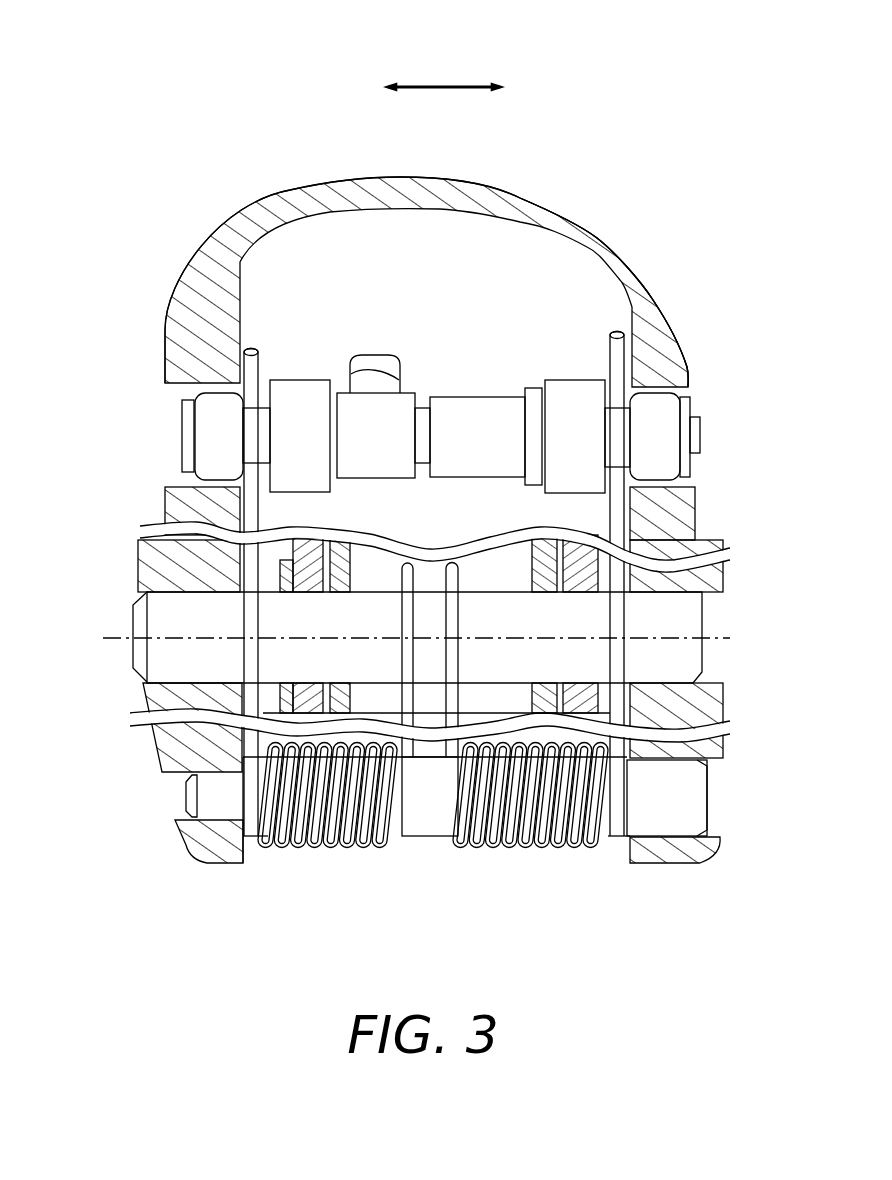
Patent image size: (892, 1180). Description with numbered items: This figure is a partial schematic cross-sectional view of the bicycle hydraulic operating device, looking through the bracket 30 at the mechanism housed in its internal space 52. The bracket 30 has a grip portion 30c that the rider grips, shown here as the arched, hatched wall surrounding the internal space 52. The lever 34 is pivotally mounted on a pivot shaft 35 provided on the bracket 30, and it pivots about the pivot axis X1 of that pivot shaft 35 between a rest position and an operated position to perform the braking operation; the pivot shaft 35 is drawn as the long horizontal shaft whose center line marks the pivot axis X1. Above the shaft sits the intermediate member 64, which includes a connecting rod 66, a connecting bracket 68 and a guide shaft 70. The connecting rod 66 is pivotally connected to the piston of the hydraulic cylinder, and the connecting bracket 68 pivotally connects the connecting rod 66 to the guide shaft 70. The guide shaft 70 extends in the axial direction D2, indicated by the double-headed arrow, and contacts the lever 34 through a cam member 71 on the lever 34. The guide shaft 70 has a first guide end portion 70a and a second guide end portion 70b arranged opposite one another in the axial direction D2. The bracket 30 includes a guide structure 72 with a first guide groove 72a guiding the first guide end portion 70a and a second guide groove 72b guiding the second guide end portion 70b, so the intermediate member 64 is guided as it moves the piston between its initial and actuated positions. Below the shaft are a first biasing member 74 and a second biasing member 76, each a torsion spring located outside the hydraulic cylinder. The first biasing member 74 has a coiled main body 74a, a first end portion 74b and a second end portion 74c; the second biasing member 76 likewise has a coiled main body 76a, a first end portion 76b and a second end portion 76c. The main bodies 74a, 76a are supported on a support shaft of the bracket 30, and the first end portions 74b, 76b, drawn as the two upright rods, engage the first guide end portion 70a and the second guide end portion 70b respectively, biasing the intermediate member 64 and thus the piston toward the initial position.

The bracket 30 is at (641, 156).
The grip portion 30c is at (656, 273).
The internal space 52 is at (346, 236).
The lever 34 is at (281, 575).
The pivot shaft 35 is at (676, 650).
The intermediate member 64 is at (329, 370).
The connecting rod 66 is at (372, 373).
The connecting bracket 68 is at (403, 398).
The guide shaft 70 is at (563, 370).
The first guide end portion 70a is at (702, 464).
The second guide end portion 70b is at (176, 438).
The cam member 71 is at (547, 565).
The guide structure 72 is at (158, 393).
The first guide groove 72a is at (652, 415).
The second guide groove 72b is at (212, 393).
The first biasing member 74 is at (533, 856).
The main body 74a is at (577, 857).
The first end portion 74b is at (619, 357).
The second end portion 74c is at (405, 707).
The second biasing member 76 is at (322, 855).
The main body 76a is at (283, 852).
The first end portion 76b is at (252, 348).
The second end portion 76c is at (452, 703).
The axial direction D2 is at (440, 84).
The pivot axis X1 is at (121, 639).